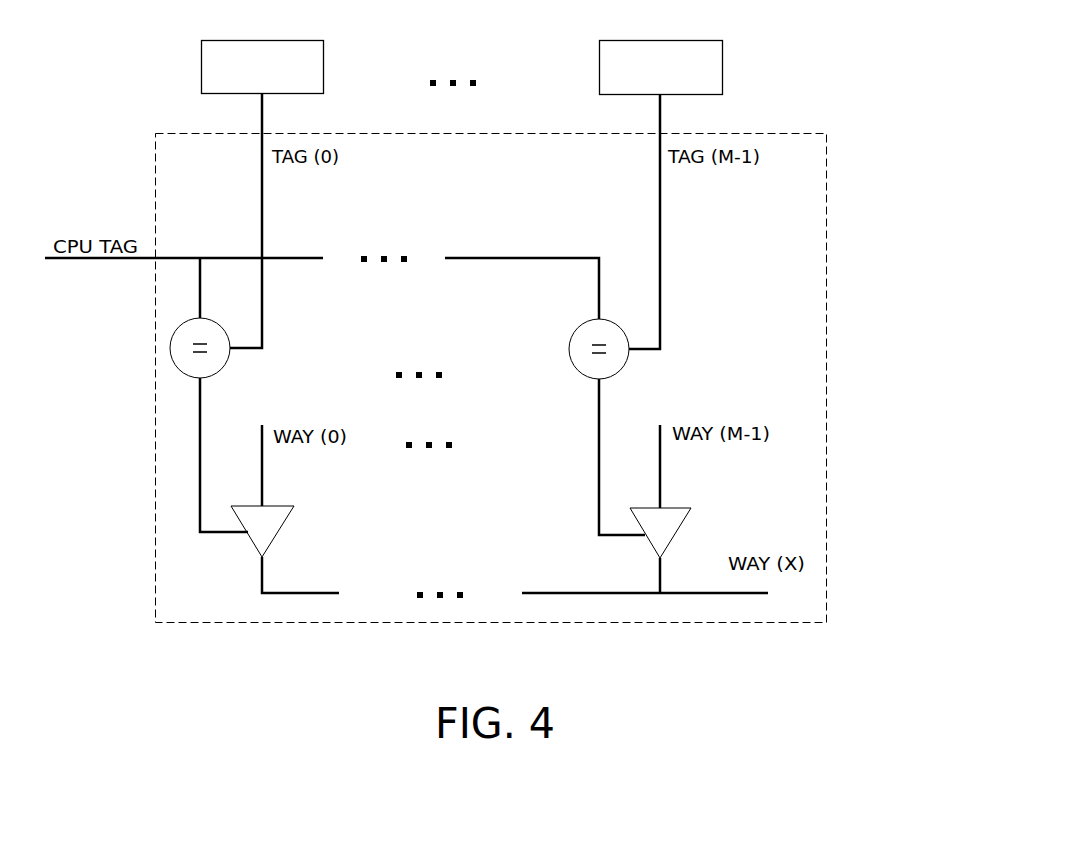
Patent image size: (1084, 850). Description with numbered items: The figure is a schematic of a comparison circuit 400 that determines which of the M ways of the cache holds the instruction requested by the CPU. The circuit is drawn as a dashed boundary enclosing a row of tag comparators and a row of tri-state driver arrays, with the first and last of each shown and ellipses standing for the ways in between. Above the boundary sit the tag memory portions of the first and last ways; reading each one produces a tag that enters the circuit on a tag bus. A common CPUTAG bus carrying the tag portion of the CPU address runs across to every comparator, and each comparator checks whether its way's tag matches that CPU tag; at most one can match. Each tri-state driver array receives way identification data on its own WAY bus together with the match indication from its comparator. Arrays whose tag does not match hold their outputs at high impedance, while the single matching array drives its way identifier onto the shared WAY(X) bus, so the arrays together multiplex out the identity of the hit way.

The comparison circuit 400 is at (827, 193).